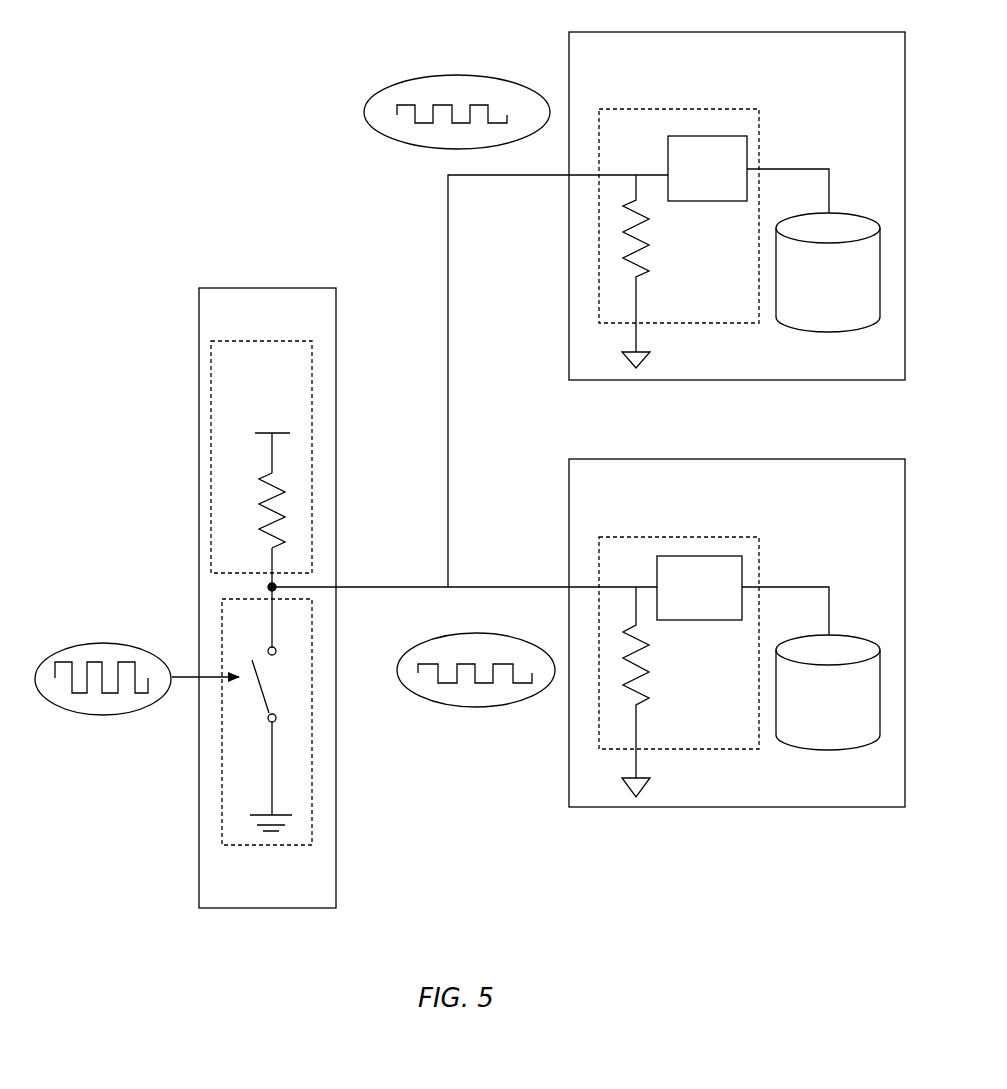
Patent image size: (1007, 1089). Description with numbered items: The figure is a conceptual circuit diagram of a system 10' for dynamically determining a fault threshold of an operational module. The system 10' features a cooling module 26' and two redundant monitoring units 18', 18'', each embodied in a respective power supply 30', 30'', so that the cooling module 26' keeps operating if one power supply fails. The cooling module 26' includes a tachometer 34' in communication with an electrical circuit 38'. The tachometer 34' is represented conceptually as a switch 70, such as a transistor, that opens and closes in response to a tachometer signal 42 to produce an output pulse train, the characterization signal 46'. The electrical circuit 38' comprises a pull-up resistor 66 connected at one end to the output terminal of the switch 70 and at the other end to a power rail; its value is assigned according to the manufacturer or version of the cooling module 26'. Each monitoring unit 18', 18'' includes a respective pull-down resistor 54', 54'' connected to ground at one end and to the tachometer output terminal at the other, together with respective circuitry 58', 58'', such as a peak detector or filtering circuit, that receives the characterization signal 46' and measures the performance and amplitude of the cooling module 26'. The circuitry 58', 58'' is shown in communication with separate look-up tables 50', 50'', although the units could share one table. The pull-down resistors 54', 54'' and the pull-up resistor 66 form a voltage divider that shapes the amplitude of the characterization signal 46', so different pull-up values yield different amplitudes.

The system 10' is at (173, 107).
The tachometer signal 42 is at (113, 643).
The cooling module 26' is at (267, 598).
The electrical circuit 38' is at (261, 464).
The pull-up resistor 66 is at (257, 508).
The tachometer 34' is at (267, 716).
The switch 70 is at (260, 708).
The characterization signal 46' is at (459, 391).
The power supply 30' is at (737, 206).
The monitoring unit 18' is at (679, 230).
The circuitry 58' is at (707, 168).
The pull-down resistor 54' is at (664, 263).
The look-up table 50' is at (828, 272).
The power supply 30'' is at (737, 633).
The monitoring unit 18'' is at (679, 657).
The circuitry 58'' is at (699, 588).
The pull-down resistor 54'' is at (657, 682).
The look-up table 50'' is at (828, 692).